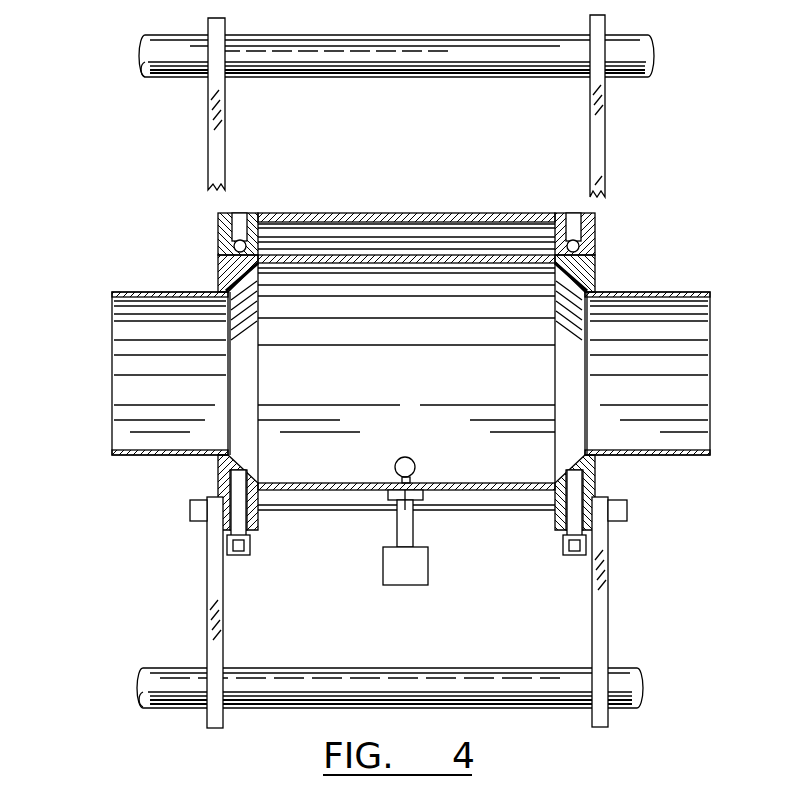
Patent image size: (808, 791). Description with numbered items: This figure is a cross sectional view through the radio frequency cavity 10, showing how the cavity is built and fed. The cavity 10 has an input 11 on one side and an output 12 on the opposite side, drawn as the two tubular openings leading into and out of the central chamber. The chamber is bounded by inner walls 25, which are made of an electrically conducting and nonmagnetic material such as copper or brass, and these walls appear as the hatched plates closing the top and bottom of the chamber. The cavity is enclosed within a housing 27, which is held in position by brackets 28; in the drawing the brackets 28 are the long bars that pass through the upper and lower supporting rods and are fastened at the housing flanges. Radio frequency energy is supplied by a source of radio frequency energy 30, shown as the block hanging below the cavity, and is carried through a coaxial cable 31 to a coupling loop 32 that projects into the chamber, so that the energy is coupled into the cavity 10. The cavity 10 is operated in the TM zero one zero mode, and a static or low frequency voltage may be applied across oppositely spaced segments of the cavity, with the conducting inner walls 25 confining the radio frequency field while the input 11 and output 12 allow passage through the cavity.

The radio frequency cavity 10 is at (160, 217).
The input 11 is at (112, 370).
The output 12 is at (710, 362).
The inner walls 25 is at (385, 255).
The housing 27 is at (452, 213).
The brackets 28 is at (606, 130).
The source of radio frequency energy 30 is at (428, 585).
The coaxial cable 31 is at (393, 513).
The coupling loop 32 is at (415, 462).